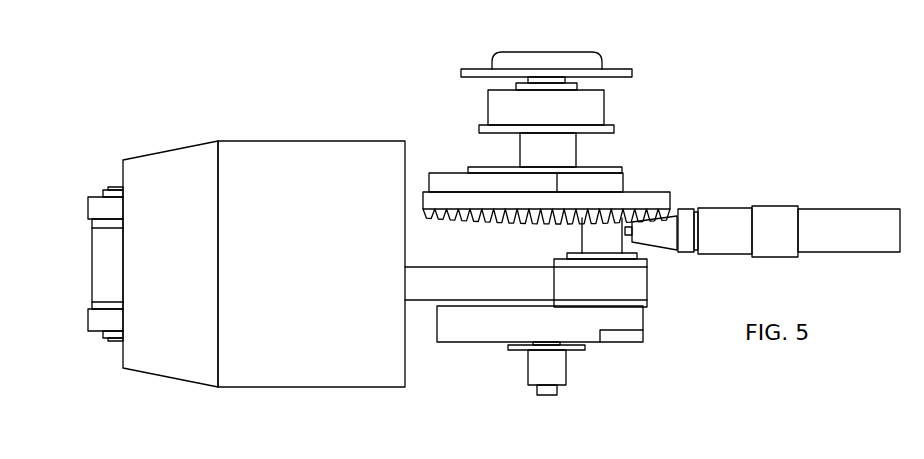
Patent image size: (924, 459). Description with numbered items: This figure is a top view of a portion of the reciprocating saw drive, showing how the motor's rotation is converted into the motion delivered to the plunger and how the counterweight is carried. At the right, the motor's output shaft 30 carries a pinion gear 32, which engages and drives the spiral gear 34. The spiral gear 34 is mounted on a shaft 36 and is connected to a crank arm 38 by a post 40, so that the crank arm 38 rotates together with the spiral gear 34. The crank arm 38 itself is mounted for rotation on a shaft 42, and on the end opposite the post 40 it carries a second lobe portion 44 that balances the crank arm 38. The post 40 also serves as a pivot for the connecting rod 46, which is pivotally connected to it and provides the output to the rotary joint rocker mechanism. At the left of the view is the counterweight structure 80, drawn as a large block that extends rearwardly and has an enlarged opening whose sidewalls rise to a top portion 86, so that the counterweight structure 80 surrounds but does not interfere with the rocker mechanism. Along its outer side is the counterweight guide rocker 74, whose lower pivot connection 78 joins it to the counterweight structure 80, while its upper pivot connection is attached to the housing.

The output shaft 30 is at (720, 232).
The pinion gear 32 is at (661, 230).
The spiral gear 34 is at (650, 198).
The shaft 36 is at (577, 151).
The crank arm 38 is at (587, 327).
The post 40 is at (596, 239).
The shaft 42 is at (548, 397).
The second lobe portion 44 is at (470, 325).
The connecting rod 46 is at (460, 287).
The counterweight guide rocker 74 is at (98, 320).
The lower pivot connection 78 is at (115, 340).
The counterweight structure 80 is at (282, 141).
The top portion 86 is at (319, 281).